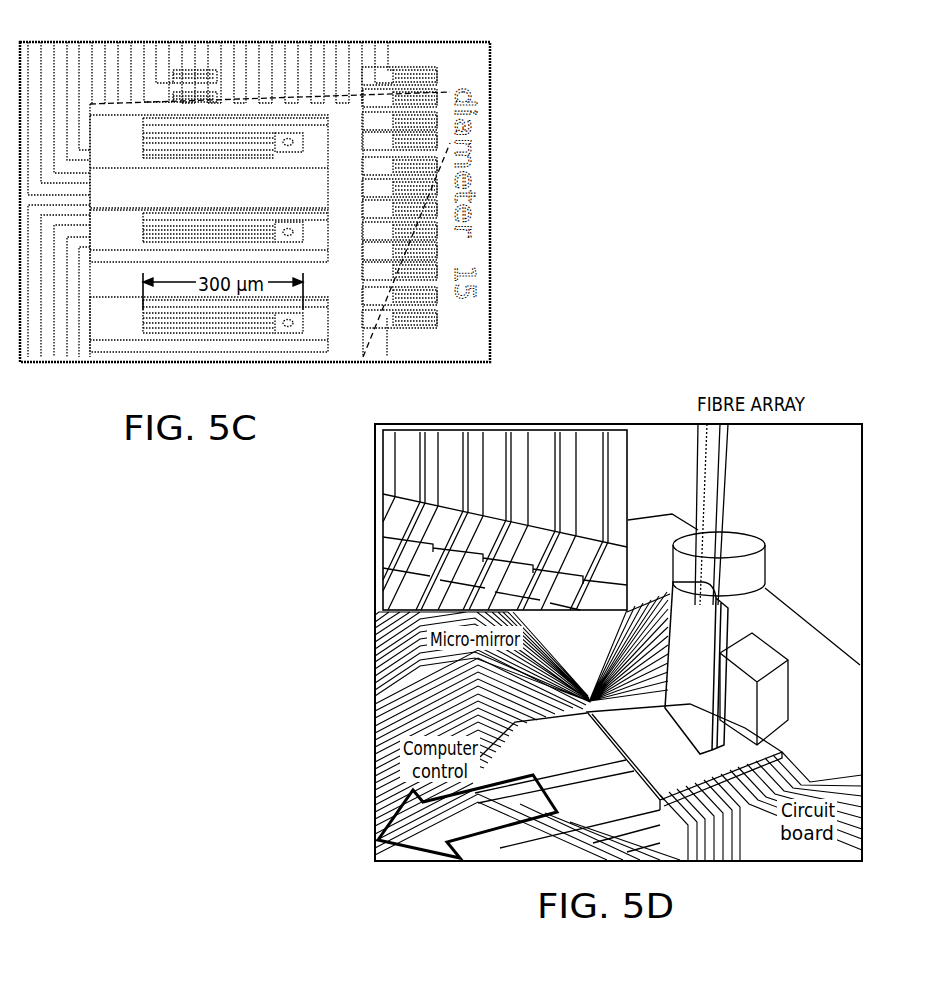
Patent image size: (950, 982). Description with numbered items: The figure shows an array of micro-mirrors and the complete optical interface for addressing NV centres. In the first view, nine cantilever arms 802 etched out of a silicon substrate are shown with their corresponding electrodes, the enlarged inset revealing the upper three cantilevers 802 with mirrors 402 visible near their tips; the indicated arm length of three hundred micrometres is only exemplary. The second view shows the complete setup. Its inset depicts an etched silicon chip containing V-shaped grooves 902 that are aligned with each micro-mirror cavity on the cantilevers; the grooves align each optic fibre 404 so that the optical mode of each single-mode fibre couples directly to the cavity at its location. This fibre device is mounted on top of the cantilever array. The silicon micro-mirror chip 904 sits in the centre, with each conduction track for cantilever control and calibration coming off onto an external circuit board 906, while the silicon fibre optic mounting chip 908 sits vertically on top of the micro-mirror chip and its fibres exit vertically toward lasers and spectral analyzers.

In FIG. 5C, the mirror 402 is at (288, 138).
In FIG. 5C, the cantilever arm 802 is at (237, 215).
In FIG. 5D, the V-shaped groove 902 is at (548, 445).
In FIG. 5D, the optic fibre 404 is at (575, 483).
In FIG. 5D, the silicon micro-mirror chip 904 is at (668, 748).
In FIG. 5D, the external circuit board 906 is at (691, 849).
In FIG. 5D, the silicon fibre optic mounting chip 908 is at (722, 653).